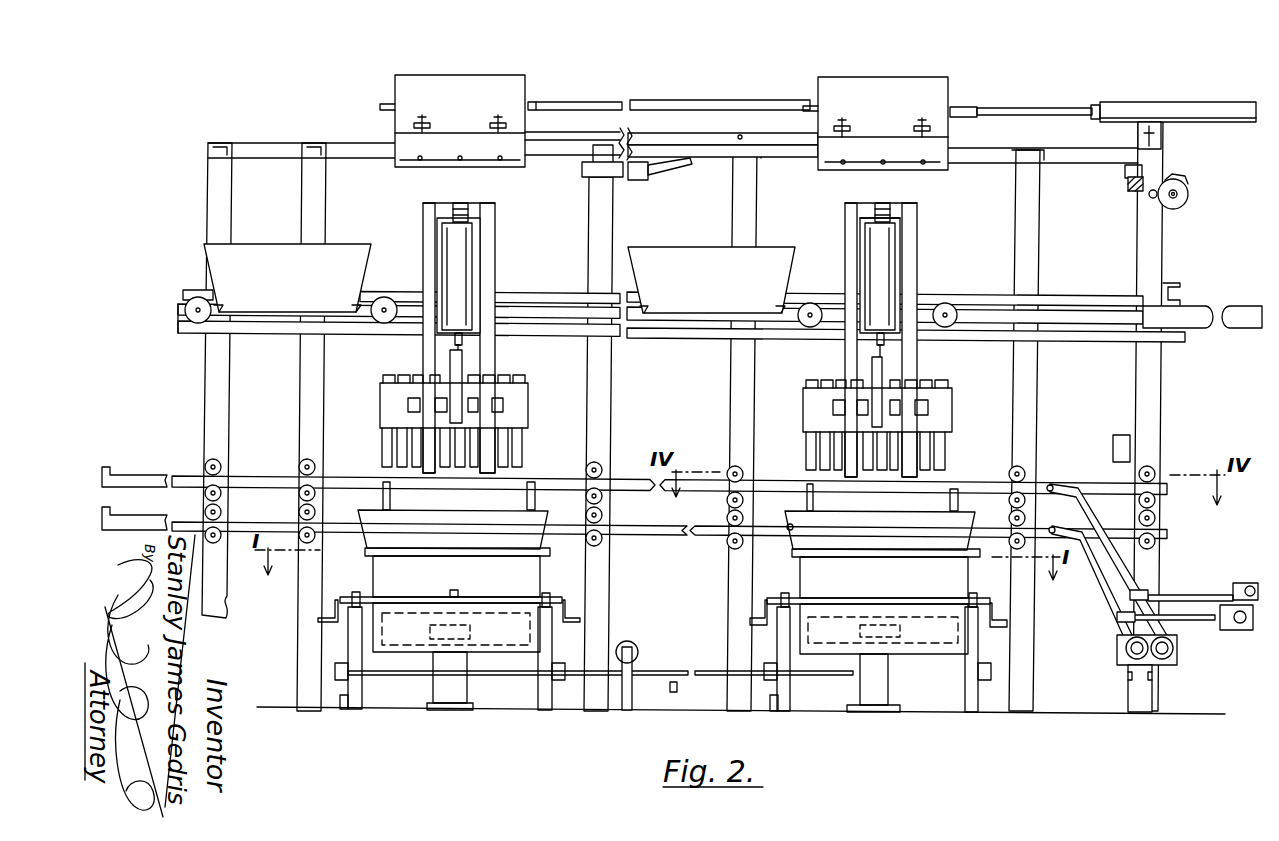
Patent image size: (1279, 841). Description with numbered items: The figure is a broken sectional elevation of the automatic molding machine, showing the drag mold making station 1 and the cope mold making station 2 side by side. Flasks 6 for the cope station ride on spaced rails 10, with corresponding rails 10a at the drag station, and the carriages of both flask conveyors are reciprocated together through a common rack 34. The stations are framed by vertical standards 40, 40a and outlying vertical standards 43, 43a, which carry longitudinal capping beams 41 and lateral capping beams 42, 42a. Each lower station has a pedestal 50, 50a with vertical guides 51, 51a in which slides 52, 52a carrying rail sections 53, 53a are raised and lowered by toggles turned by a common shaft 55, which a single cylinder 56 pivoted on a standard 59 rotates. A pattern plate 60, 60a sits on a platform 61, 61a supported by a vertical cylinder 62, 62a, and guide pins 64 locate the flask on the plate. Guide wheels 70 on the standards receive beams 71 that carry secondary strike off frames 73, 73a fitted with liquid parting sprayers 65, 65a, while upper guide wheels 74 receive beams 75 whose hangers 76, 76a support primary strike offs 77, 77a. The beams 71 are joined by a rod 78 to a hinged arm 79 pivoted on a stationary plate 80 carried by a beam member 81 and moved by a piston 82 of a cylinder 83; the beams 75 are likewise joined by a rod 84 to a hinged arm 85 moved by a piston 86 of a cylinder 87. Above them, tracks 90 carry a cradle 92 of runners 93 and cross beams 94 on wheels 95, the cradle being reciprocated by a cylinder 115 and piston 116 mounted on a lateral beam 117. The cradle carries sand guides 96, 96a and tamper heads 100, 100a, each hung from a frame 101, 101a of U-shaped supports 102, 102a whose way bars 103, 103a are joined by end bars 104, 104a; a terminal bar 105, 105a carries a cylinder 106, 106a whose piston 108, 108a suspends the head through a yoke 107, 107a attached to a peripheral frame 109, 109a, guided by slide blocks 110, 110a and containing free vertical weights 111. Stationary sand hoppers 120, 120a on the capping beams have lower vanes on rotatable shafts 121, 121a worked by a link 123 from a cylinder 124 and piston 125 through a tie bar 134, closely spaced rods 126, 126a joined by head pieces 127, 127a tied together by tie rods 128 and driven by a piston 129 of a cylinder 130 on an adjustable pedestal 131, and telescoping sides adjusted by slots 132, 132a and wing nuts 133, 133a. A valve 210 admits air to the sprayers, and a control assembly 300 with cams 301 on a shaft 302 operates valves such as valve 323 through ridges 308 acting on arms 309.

The machine 1 is at (1066, 737).
The base 2 is at (308, 727).
The mold box 6 is at (540, 570).
The bracket 10 is at (318, 612).
The bracket 10a is at (752, 622).
The stop 34 is at (670, 695).
The frame column 40 is at (300, 376).
The frame column 40a is at (732, 375).
The top rail 41 is at (660, 145).
The column cap 42 is at (222, 143).
The column cap 42a is at (1027, 149).
The end column 43 is at (208, 210).
The end column 43a is at (1162, 240).
The mold support 50 is at (380, 713).
The mold support 50a is at (933, 720).
The guide block 51 is at (340, 700).
The guide block 51a is at (770, 705).
The guide post 52 is at (350, 607).
The guide post 52a is at (777, 612).
The post tab 53 is at (356, 592).
The post tab 53a is at (783, 593).
The pedestal 55 is at (845, 713).
The cam 56 is at (635, 648).
The shaft 59 is at (632, 670).
The lower box 60 is at (418, 645).
The lower box 60a is at (900, 655).
The inner plate 61 is at (480, 650).
The inner plate 61a is at (843, 640).
The pedestal 62 is at (467, 680).
The pedestal 62a is at (888, 685).
The tab 64 is at (457, 592).
The chain hook 65 is at (355, 525).
The chain hook 65a is at (790, 525).
The roller 70 is at (205, 513).
The chain bar 71 is at (248, 535).
The tray plate 73 is at (540, 552).
The tray plate 73a is at (970, 556).
The roller 74 is at (315, 466).
The upper chain 75 is at (233, 478).
The post 76 is at (392, 497).
The post 76a is at (815, 498).
The tray 77 is at (457, 515).
The tray 77a is at (880, 530).
The lower arm 78 is at (1052, 528).
The arm 79 is at (1093, 565).
The bearing block 80 is at (1117, 645).
The support post 81 is at (1128, 690).
The rod 82 is at (1190, 620).
The cylinder 83 is at (1235, 632).
The upper arm 84 is at (1050, 486).
The link 85 is at (1130, 577).
The rod 86 is at (1200, 595).
The cylinder 87 is at (1245, 583).
The conveyor rail 90 is at (365, 290).
The conveyor end 92 is at (180, 298).
The upper rail 93 is at (530, 298).
The hopper support 94 is at (355, 318).
The roller 95 is at (387, 300).
The hopper 96 is at (265, 243).
The hopper 96a is at (670, 250).
The needle head 100 is at (538, 422).
The needle head 100a is at (961, 401).
The cylinder assembly 101 is at (511, 226).
The cylinder assembly 101a is at (847, 242).
The cylinder 102 is at (495, 245).
The cylinder 102a is at (918, 245).
The guide post 103 is at (428, 225).
The guide post 103a is at (917, 265).
The bracket 104 is at (455, 203).
The bracket 104a is at (870, 205).
The cap 105 is at (468, 207).
The cap 105a is at (890, 207).
The piston rod 106 is at (445, 333).
The piston rod 106a is at (868, 265).
The plunger 107 is at (465, 372).
The plunger 107a is at (872, 362).
The coupling 108 is at (462, 348).
The coupling 108a is at (883, 350).
The head block 109 is at (528, 392).
The head block 109a is at (953, 420).
The opening 110 is at (420, 405).
The opening 110a is at (835, 407).
The needle 111 is at (525, 452).
The roller 115 is at (1240, 327).
The roller 116 is at (1085, 310).
The bracket 117 is at (1175, 285).
The control box 120 is at (505, 78).
The control box 120a is at (940, 80).
The box base 121 is at (410, 160).
The box base 121a is at (835, 170).
The rail 123 is at (790, 145).
The block 124 is at (610, 180).
The block 125 is at (640, 180).
The stub 126 is at (388, 105).
The stub 126a is at (808, 107).
The rod 127 is at (535, 102).
The rod 127a is at (960, 108).
The rod 128 is at (645, 102).
The rod 129 is at (1045, 108).
The cylinder 130 is at (1140, 103).
The bracket 131 is at (1138, 133).
The switch 132 is at (422, 115).
The switch 132a is at (845, 118).
The switch arm 133 is at (432, 125).
The switch arm 133a is at (852, 125).
The lever 134 is at (675, 165).
The block 210 is at (1115, 440).
The wheel assembly 300 is at (1204, 186).
The hub 301 is at (1190, 196).
The axle 302 is at (1178, 200).
The tab 308 is at (1185, 180).
The roller 309 is at (1160, 190).
The bracket 323 is at (1130, 192).